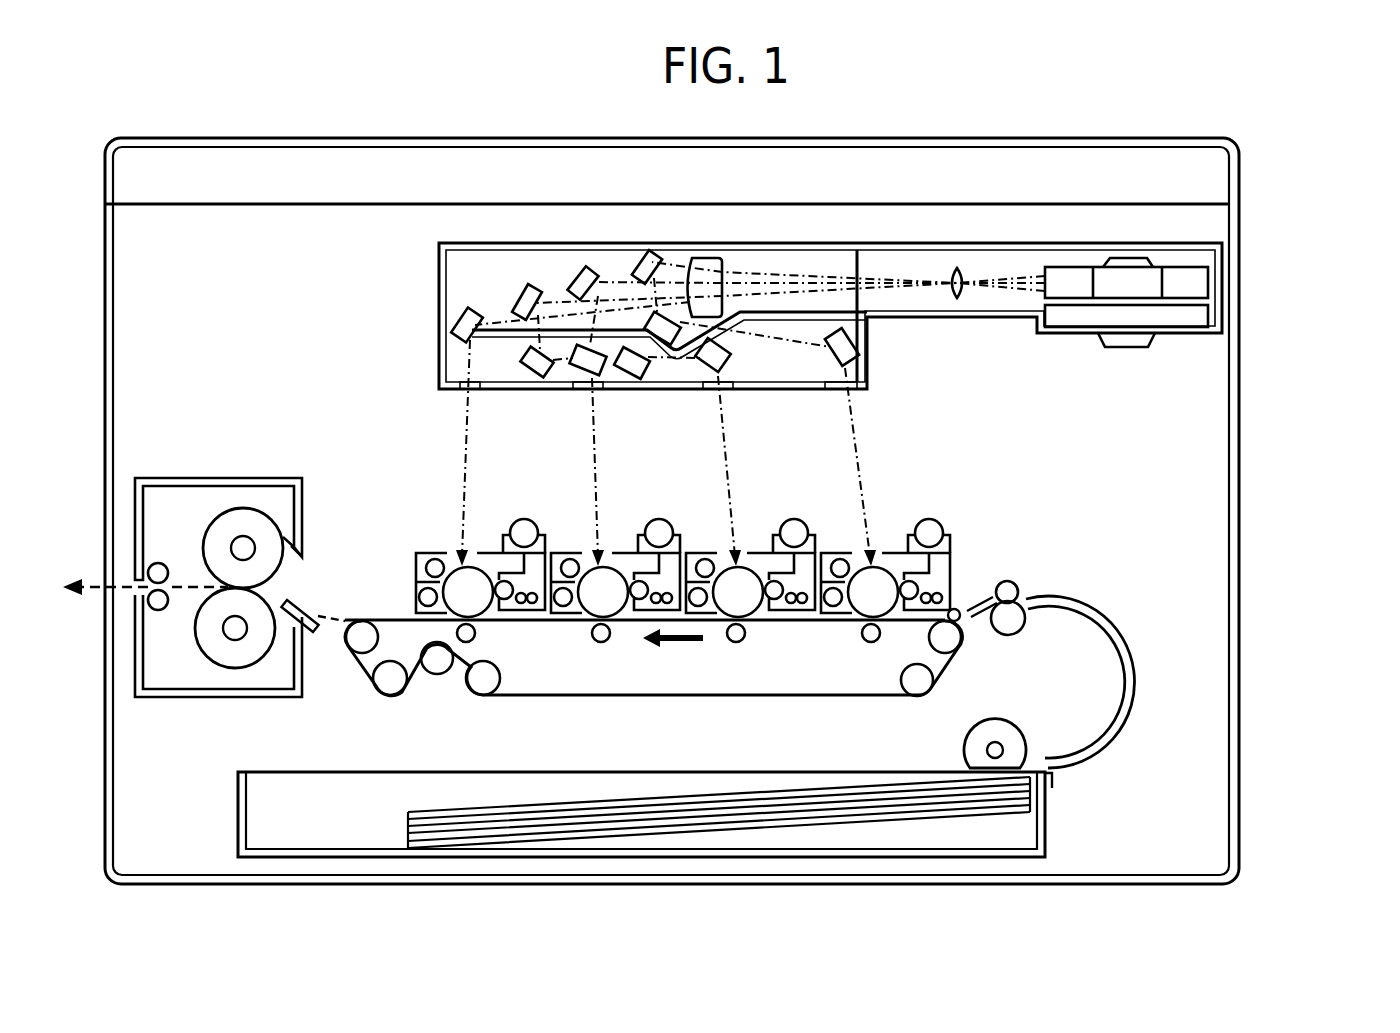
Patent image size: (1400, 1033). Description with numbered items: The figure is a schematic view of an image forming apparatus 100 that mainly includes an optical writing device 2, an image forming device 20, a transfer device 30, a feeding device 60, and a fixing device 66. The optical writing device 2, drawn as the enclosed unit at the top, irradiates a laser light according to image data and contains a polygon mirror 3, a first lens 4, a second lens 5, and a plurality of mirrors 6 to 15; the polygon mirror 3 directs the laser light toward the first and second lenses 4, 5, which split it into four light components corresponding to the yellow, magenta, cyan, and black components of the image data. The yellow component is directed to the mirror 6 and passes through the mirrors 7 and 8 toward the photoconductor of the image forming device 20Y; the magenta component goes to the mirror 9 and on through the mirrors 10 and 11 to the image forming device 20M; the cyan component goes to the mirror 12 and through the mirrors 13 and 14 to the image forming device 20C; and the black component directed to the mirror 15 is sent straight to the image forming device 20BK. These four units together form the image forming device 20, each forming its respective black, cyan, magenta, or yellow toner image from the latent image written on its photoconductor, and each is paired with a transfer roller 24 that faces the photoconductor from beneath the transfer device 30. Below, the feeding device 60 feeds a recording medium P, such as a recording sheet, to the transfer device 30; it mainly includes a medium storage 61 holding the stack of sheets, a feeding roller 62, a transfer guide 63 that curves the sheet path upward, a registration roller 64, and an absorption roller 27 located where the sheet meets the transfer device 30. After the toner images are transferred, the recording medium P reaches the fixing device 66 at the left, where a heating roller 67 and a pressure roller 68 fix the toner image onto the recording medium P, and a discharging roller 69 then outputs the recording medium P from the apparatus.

The image forming apparatus 100 is at (1268, 368).
The optical writing device 2 is at (1056, 245).
The polygon mirror 3 is at (1128, 275).
The first lens 4 is at (958, 268).
The second lens 5 is at (722, 262).
The mirror 6 is at (636, 256).
The mirror 7 is at (664, 348).
The mirror 8 is at (858, 342).
The mirror 9 is at (574, 268).
The mirror 10 is at (640, 380).
The mirror 11 is at (730, 350).
The mirror 12 is at (516, 286).
The mirror 13 is at (533, 382).
The mirror 14 is at (598, 378).
The mirror 15 is at (456, 318).
The image forming device 20 is at (710, 524).
The image forming device 20BK is at (432, 550).
The image forming device 20C is at (568, 550).
The image forming device 20M is at (705, 550).
The image forming device 20Y is at (840, 550).
The transfer roller 24 is at (476, 638).
The absorption roller 27 is at (960, 624).
The transfer device 30 is at (393, 598).
The feeding device 60 is at (690, 686).
The medium storage 61 is at (1020, 834).
The feeding roller 62 is at (1014, 719).
The transfer guide 63 is at (1092, 606).
The registration roller 64 is at (1010, 582).
The fixing device 66 is at (204, 583).
The heating roller 67 is at (243, 508).
The pressure roller 68 is at (235, 668).
The discharging roller 69 is at (158, 563).
The recording medium P is at (849, 800).